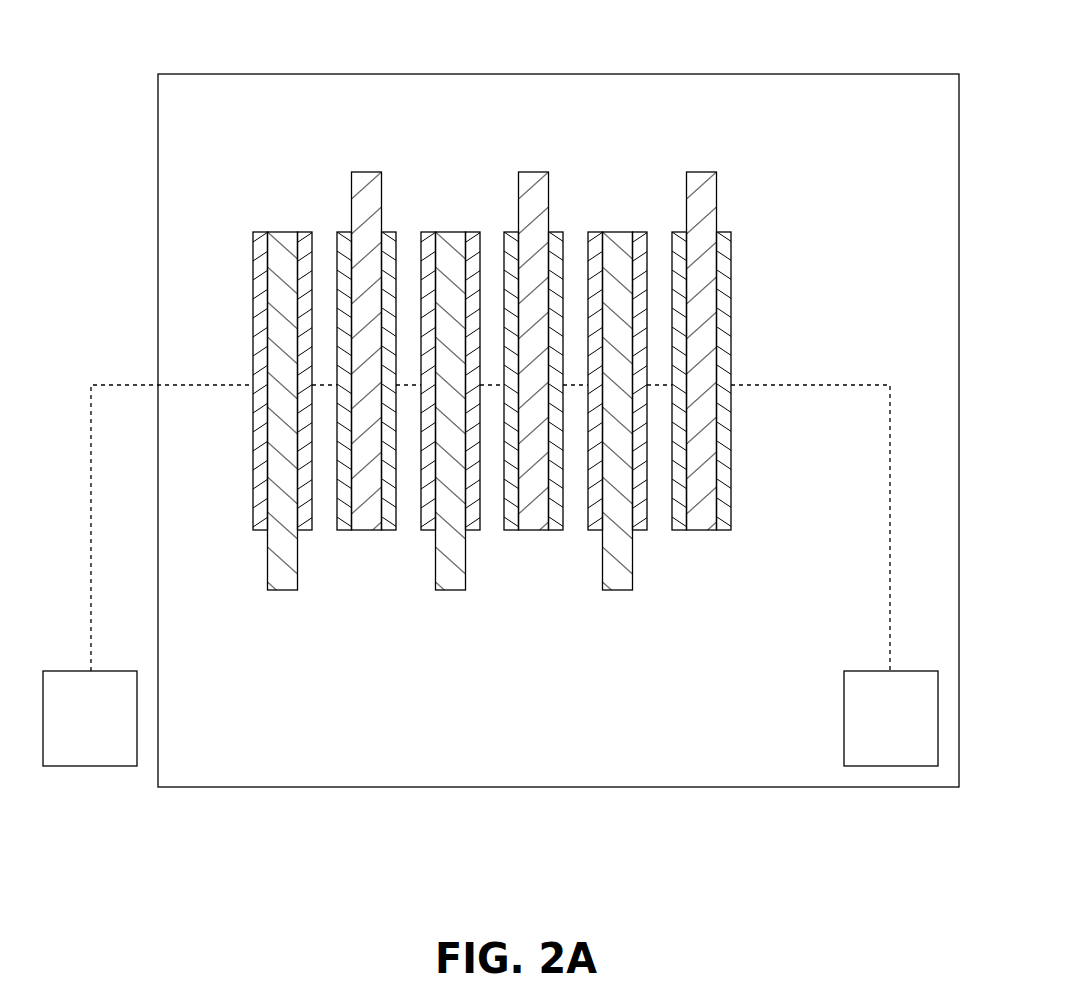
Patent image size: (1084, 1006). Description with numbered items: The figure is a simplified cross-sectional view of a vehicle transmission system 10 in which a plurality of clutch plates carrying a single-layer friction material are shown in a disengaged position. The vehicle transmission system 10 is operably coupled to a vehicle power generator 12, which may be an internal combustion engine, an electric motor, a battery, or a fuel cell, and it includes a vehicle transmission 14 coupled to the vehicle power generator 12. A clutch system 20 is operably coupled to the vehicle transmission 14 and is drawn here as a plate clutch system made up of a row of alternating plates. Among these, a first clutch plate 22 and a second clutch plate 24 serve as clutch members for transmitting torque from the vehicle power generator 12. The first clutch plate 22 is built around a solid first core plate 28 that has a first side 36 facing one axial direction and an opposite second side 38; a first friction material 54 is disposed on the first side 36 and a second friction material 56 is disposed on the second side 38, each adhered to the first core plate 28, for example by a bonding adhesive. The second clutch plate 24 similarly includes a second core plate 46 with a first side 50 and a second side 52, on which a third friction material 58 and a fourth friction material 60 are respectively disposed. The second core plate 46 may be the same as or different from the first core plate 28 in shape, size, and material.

The vehicle transmission system 10 is at (819, 73).
The vehicle power generator 12 is at (90, 671).
The vehicle transmission 14 is at (866, 671).
The clutch system 20 is at (345, 598).
The first clutch plate 22 is at (276, 207).
The second clutch plate 24 is at (362, 158).
The first core plate 28 is at (278, 590).
The first side 36 is at (262, 560).
The second side 38 is at (302, 560).
The second core plate 46 is at (375, 187).
The first side 50 is at (346, 205).
The second side 52 is at (387, 205).
The first friction material 54 is at (260, 503).
The second friction material 56 is at (302, 235).
The third friction material 58 is at (343, 530).
The fourth friction material 60 is at (390, 237).